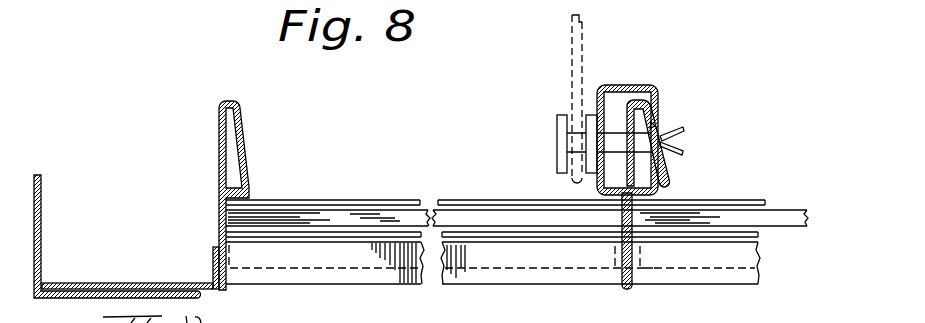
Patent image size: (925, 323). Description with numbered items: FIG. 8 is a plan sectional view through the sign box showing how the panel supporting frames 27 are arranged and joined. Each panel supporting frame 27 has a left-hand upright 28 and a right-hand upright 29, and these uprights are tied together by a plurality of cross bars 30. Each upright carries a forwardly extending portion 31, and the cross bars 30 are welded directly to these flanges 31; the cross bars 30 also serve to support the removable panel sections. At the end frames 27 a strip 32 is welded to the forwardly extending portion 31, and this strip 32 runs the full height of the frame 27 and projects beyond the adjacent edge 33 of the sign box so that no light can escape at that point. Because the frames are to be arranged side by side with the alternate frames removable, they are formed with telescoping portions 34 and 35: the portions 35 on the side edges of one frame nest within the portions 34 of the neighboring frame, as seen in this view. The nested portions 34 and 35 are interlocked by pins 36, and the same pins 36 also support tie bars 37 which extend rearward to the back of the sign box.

The panel supporting frame 27 is at (621, 289).
The left-hand upright 28 is at (218, 194).
The right-hand upright 29 is at (660, 122).
The cross bar 30 is at (333, 218).
The forwardly extending portion 31 is at (233, 287).
The strip 32 is at (203, 283).
The adjacent edge of the sign box 33 is at (196, 295).
The telescoping portion 34 is at (621, 86).
The telescoping portion 35 is at (690, 177).
The pin 36 is at (562, 168).
The tie bar 37 is at (571, 83).